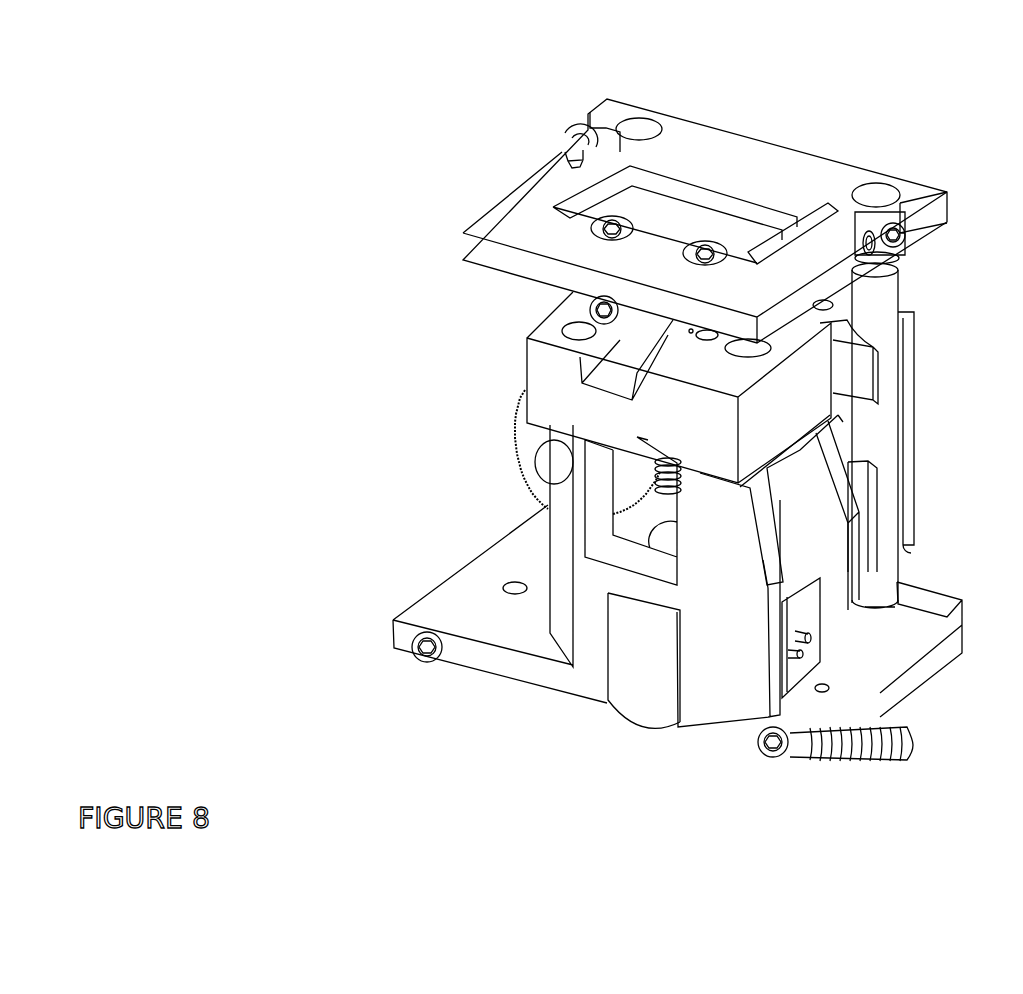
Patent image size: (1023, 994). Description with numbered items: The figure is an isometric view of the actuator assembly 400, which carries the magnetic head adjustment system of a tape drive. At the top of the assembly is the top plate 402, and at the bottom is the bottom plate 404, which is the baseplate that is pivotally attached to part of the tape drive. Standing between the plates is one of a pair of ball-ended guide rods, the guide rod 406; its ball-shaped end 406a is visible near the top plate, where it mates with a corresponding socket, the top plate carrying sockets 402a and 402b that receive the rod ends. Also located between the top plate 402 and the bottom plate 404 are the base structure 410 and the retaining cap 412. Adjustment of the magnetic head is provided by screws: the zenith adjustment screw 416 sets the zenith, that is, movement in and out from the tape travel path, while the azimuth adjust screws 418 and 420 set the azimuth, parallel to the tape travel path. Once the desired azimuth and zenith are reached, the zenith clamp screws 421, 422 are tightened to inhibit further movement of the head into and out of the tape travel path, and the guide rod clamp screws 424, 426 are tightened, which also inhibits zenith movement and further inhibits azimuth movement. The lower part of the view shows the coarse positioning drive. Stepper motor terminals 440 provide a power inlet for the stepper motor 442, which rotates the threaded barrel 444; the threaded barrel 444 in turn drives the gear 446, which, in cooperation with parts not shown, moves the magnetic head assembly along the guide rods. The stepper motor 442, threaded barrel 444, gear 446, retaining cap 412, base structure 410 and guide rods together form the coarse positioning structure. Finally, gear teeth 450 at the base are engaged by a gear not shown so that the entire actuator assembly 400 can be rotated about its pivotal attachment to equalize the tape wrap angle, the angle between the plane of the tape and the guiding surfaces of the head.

The actuator assembly 400 is at (240, 200).
The top plate 402 is at (705, 221).
The socket 402a is at (876, 188).
The socket 402b is at (640, 118).
The bottom plate 404 is at (677, 571).
The ball-ended guide rod 406 is at (867, 435).
The ball-shaped end 406a is at (880, 242).
The base structure 410 is at (768, 586).
The retaining cap 412 is at (680, 387).
The zenith adjustment screw 416 is at (591, 311).
The azimuth adjust screw 418 is at (859, 227).
The azimuth adjust screw 420 is at (566, 152).
The zenith clamp screw 421 is at (600, 229).
The zenith clamp screw 422 is at (717, 268).
The guide rod clamp screw 424 is at (910, 244).
The guide rod clamp screw 426 is at (568, 131).
The stepper motor terminals 440 is at (826, 640).
The stepper motor 442 is at (644, 660).
The threaded barrel 444 is at (662, 484).
The gear 446 is at (512, 418).
The gear teeth 450 is at (857, 764).